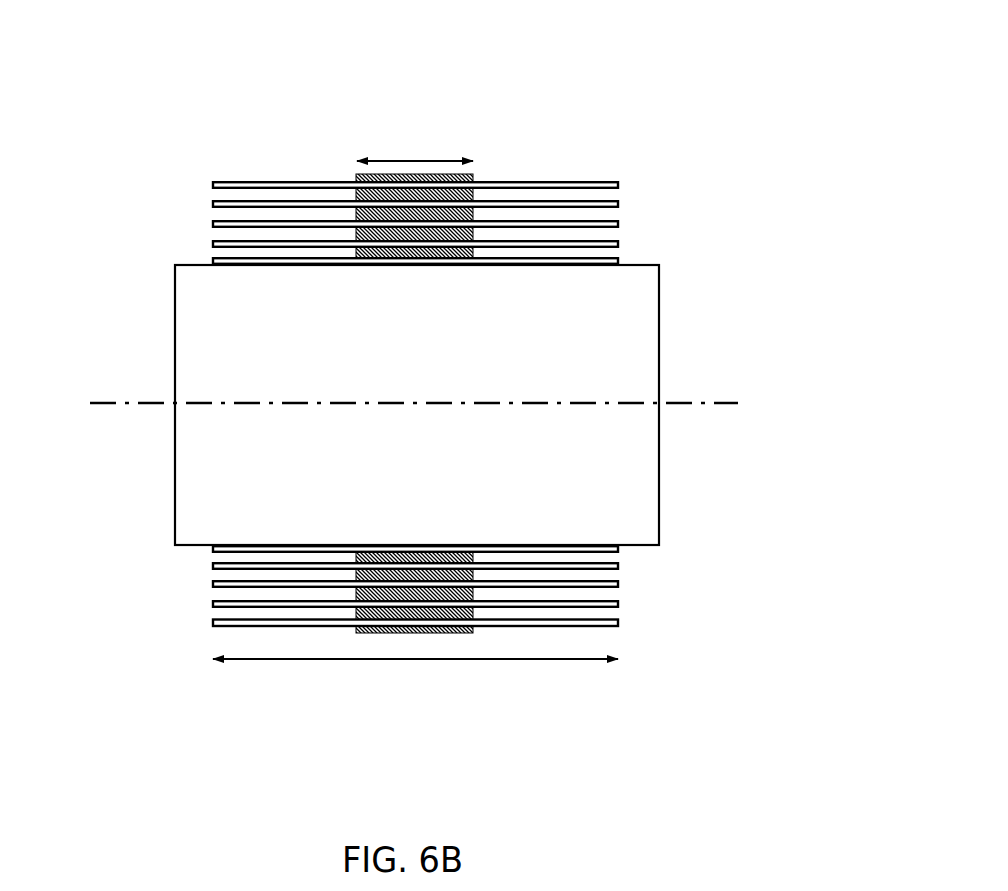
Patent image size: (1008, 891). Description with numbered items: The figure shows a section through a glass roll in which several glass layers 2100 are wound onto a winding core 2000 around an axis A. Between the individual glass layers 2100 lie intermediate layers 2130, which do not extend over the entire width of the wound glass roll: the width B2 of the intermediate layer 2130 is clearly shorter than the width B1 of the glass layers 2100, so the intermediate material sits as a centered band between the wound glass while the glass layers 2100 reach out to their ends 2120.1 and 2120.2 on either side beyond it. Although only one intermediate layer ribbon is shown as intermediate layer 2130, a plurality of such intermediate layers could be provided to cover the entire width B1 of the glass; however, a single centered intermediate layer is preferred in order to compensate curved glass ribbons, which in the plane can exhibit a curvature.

The intermediate layer 2130 is at (335, 182).
The glass layer 2100 is at (547, 170).
The first fin end portion 2120.1 is at (207, 185).
The second fin end portion 2120.2 is at (623, 183).
The winding core 2000 is at (618, 351).
The axis A is at (709, 412).
The width of the glass layers B1 is at (278, 668).
The width of the intermediate layer B2 is at (405, 147).